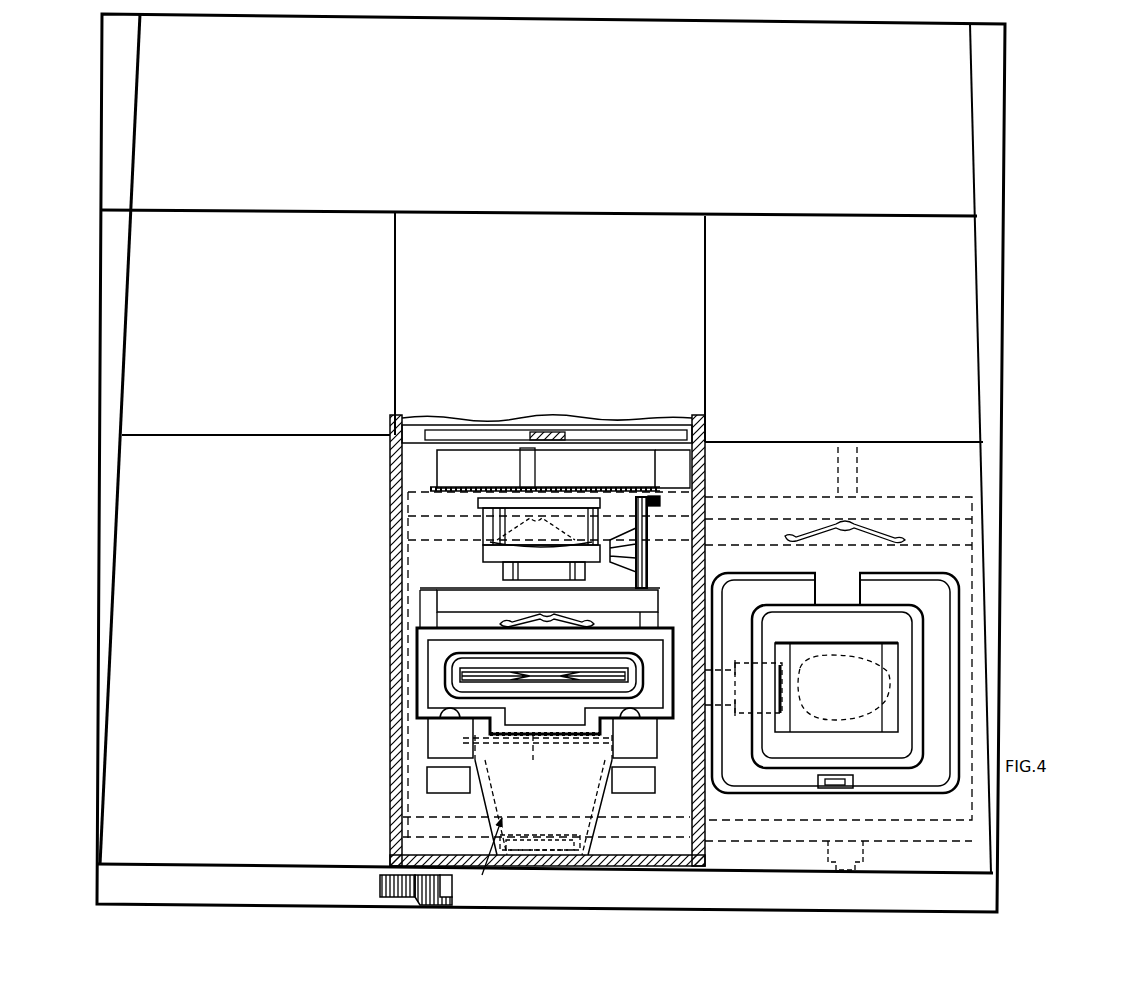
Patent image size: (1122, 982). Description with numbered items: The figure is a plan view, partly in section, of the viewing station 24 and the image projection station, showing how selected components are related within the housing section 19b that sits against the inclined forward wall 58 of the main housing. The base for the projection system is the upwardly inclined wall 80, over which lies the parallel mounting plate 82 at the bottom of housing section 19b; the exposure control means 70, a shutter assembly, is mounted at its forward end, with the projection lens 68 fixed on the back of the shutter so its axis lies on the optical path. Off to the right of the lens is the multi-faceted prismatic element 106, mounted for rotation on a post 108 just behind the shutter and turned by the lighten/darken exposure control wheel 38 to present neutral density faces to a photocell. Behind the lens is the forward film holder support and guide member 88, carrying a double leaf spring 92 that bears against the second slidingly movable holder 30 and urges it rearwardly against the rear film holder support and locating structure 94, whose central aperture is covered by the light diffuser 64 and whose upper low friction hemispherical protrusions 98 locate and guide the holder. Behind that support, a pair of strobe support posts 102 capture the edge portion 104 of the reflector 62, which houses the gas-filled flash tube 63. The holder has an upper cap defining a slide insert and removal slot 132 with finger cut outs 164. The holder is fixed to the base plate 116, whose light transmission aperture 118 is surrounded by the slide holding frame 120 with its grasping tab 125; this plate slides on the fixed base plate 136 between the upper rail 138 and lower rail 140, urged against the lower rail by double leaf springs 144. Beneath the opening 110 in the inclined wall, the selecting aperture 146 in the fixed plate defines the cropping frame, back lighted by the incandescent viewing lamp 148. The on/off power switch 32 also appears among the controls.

The housing section 19b is at (672, 283).
The inclined forward wall 58 is at (945, 264).
The exposure control means 70 is at (460, 465).
The prismatic element 106 is at (618, 528).
The lighten/darken exposure control wheel 38 is at (641, 497).
The post 108 is at (700, 500).
The projection lens 68 is at (483, 515).
The upwardly inclined wall 80 is at (708, 558).
The forward film holder support and guide member 88 is at (436, 598).
The double leaf spring 92 is at (517, 620).
The second slidingly movable holder 30 is at (426, 673).
The slide insert and removal slot 132 is at (478, 672).
The finger cut outs 164 is at (540, 668).
The upper low friction hemispherical protrusions 98 is at (460, 726).
The mounting plate 82 is at (420, 744).
The rear film holder support and locating structure 94 is at (428, 750).
The edge portion 104 is at (448, 780).
The strobe support posts 102 is at (486, 795).
The light diffuser 64 is at (533, 760).
The gas-filled flash tube 63 is at (553, 835).
The reflector 62 is at (487, 857).
The on/off power switch 32 is at (440, 905).
The opening 110 is at (713, 597).
The slide holding frame 120 is at (872, 592).
The selecting aperture 146 is at (880, 655).
The light transmission aperture 118 is at (802, 652).
The incandescent viewing lamp 148 is at (845, 658).
The base plate 116 is at (953, 684).
The grasping tab 125 is at (835, 788).
The double leaf springs 144 is at (870, 528).
The upper rail 138 is at (953, 514).
The base plate 136 is at (953, 536).
The viewing station 24 is at (967, 608).
The lower rail 140 is at (918, 842).